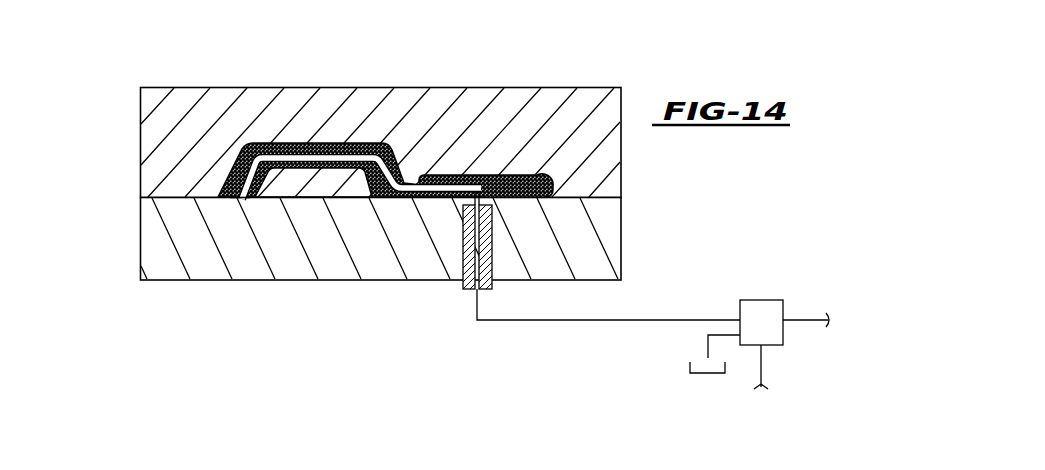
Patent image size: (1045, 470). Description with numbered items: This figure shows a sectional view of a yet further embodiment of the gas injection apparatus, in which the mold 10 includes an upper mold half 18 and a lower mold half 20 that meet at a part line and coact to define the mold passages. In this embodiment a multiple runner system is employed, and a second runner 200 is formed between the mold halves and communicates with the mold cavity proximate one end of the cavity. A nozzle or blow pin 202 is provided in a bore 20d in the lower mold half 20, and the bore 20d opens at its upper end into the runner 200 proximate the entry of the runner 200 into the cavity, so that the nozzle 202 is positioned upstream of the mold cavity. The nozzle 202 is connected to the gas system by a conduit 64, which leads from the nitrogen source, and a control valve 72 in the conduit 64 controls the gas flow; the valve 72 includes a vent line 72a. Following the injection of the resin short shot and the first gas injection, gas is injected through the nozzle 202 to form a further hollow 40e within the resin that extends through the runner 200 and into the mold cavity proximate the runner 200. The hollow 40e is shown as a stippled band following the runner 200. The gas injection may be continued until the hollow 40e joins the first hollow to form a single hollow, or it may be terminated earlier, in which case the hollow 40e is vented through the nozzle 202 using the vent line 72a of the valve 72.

The mold 10 is at (190, 77).
The upper mold half 18 is at (140, 150).
The lower mold half 20 is at (140, 257).
The hollow 40e is at (327, 150).
The second runner 200 is at (517, 175).
The bore 20d is at (490, 275).
The nozzle 202 is at (465, 289).
The conduit 64 is at (520, 321).
The control valve 72 is at (770, 300).
The vent line 72a is at (708, 335).